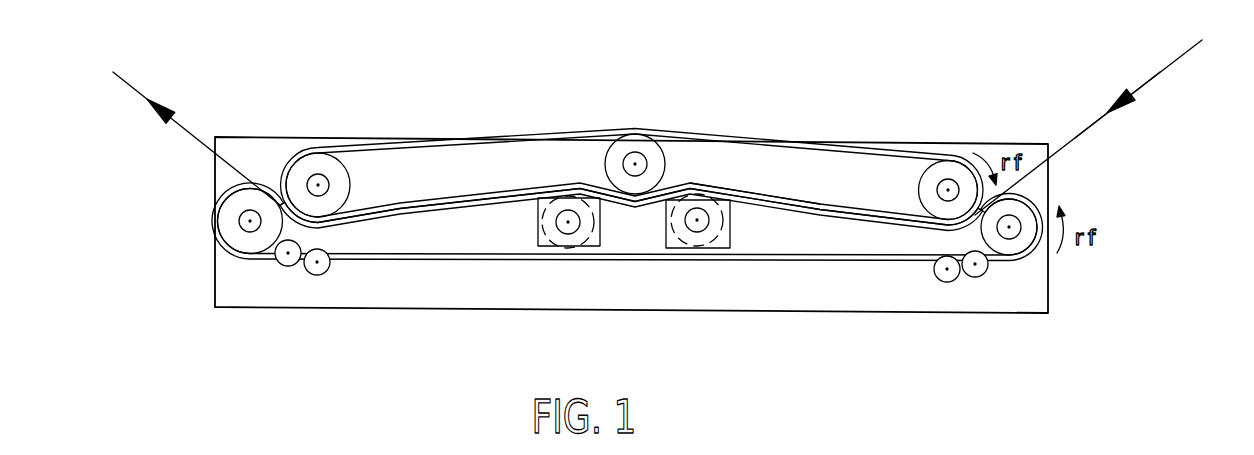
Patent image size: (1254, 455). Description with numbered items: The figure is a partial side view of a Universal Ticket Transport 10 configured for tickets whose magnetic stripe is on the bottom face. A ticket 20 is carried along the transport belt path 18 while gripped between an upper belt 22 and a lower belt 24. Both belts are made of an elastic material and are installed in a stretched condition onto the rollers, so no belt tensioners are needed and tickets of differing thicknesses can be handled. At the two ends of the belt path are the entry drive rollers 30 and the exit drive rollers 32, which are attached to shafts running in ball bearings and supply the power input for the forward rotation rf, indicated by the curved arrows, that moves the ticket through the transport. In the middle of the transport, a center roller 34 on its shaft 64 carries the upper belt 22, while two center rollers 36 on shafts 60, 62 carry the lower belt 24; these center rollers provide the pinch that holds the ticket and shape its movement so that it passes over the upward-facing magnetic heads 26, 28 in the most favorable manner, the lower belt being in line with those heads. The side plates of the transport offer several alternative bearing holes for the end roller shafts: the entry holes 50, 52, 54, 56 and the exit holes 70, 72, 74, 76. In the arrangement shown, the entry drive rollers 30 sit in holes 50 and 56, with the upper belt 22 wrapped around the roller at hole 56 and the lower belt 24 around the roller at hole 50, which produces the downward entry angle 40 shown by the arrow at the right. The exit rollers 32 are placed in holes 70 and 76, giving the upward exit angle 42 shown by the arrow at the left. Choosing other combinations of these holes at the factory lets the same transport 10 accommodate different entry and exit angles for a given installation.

The Universal Ticket Transport 10 is at (724, 322).
The transport belt path 18 is at (820, 207).
The ticket 20 is at (1075, 138).
The upper belt 22 is at (887, 155).
The lower belt 24 is at (840, 259).
The magnetic head 26 is at (730, 232).
The magnetic head 28 is at (538, 225).
The entry drive rollers 30 is at (990, 217).
The exit drive rollers 32 is at (272, 171).
The center roller 34 is at (638, 125).
The center rollers 36 is at (540, 211).
The entry angle 40 is at (1088, 125).
The exit angle 42 is at (196, 130).
The entry hole 50 is at (1012, 232).
The entry hole 52 is at (981, 274).
The entry hole 54 is at (946, 282).
The entry hole 56 is at (948, 182).
The shaft 60 is at (572, 228).
The shaft 62 is at (697, 233).
The shaft 64 is at (633, 160).
The exit hole 70 is at (245, 218).
The exit hole 72 is at (284, 265).
The exit hole 74 is at (320, 272).
The exit hole 76 is at (318, 177).